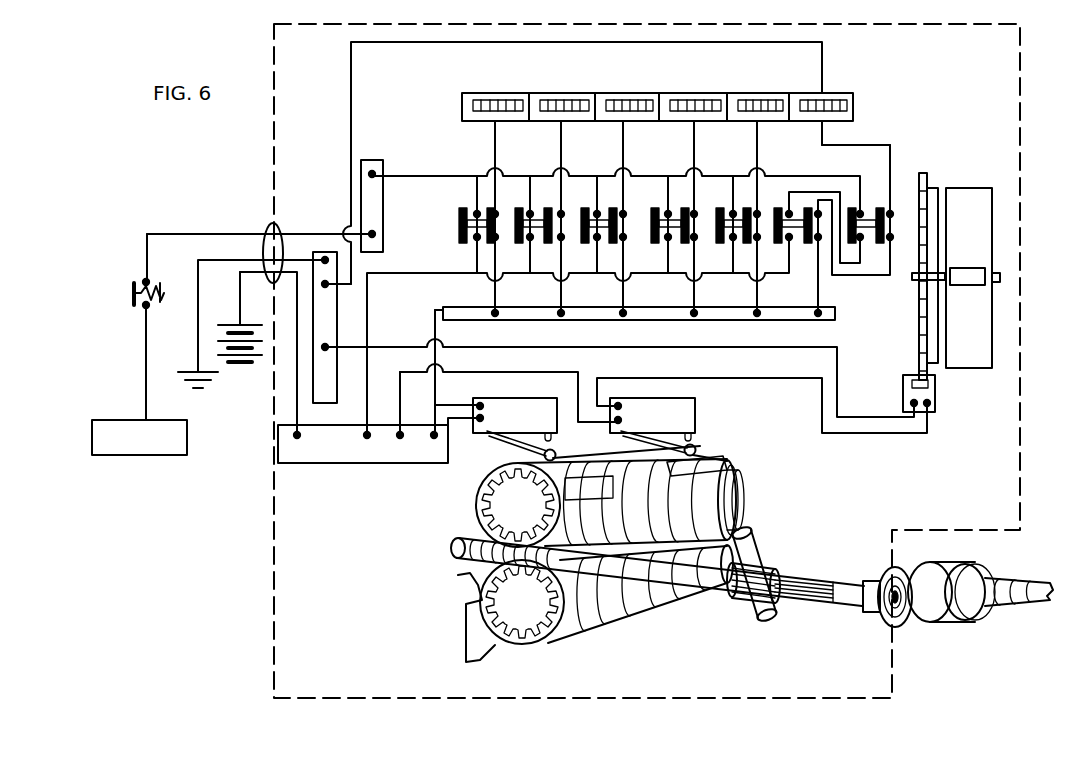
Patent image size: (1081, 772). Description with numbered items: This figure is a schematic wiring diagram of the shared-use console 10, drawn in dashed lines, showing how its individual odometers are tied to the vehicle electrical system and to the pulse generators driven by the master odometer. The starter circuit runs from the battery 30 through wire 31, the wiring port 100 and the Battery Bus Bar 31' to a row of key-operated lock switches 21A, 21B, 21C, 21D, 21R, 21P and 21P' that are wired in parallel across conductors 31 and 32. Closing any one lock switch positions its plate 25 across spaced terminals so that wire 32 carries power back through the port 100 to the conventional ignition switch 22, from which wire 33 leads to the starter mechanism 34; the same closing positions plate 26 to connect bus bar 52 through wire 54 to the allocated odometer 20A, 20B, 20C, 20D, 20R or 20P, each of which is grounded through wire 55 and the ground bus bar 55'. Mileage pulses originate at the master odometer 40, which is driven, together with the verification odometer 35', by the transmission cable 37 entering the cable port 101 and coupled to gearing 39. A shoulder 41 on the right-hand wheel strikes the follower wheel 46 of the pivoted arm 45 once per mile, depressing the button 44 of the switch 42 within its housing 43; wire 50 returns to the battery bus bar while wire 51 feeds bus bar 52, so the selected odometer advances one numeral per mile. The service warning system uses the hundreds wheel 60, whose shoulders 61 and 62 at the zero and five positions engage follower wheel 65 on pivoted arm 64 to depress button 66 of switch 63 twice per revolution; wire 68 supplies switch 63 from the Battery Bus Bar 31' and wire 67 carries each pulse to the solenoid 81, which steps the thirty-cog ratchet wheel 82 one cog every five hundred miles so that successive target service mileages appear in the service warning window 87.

The console 10 is at (893, 653).
The odometer 20A is at (493, 92).
The odometer 20B is at (560, 92).
The odometer 20C is at (626, 92).
The odometer 20D is at (690, 92).
The odometer 20R is at (757, 92).
The odometer 20P is at (819, 92).
The lock switch 21A is at (482, 203).
The lock switch 21B is at (548, 205).
The lock switch 21C is at (613, 205).
The lock switch 21D is at (685, 205).
The lock switch 21R is at (747, 205).
The lock switch 21P is at (821, 236).
The lock switch 21P' is at (878, 198).
The ignition switch 22 is at (140, 283).
The plate 25 is at (460, 241).
The plate 26 is at (491, 244).
The battery 30 is at (260, 356).
The wire 31 is at (483, 336).
The Battery Bus Bar 31' is at (363, 460).
The wire 32 is at (433, 175).
The wire 33 is at (146, 356).
The starter mechanism 34 is at (146, 412).
The verification odometer 35' is at (595, 605).
The transmission cable 37 is at (1030, 586).
The gearing 39 is at (733, 607).
The master odometer 40 is at (488, 466).
The shoulder 41 is at (600, 478).
The switch 42 is at (545, 398).
The housing 43 is at (553, 438).
The button 44 is at (640, 443).
The pivoted arm 45 is at (507, 447).
The follower wheel 46 is at (557, 452).
The wire 50 is at (447, 418).
The wire 51 is at (436, 382).
The bus bar 52 is at (479, 321).
The wire 54 is at (498, 150).
The wire 55 is at (582, 163).
The ground bus bar 55' is at (613, 334).
The hundreds wheel 60 is at (724, 500).
The shoulder 61 is at (730, 463).
The shoulder 62 is at (733, 517).
The switch 63 is at (697, 412).
The pivoted arm 64 is at (673, 398).
The follower wheel 65 is at (717, 449).
The button 66 is at (703, 434).
The wire 67 is at (401, 408).
The wire 68 is at (503, 372).
The solenoid 81 is at (936, 398).
The ratchet wheel 82 is at (922, 172).
The service warning window 87 is at (972, 268).
The wiring port 100 is at (279, 225).
The cable port 101 is at (905, 572).